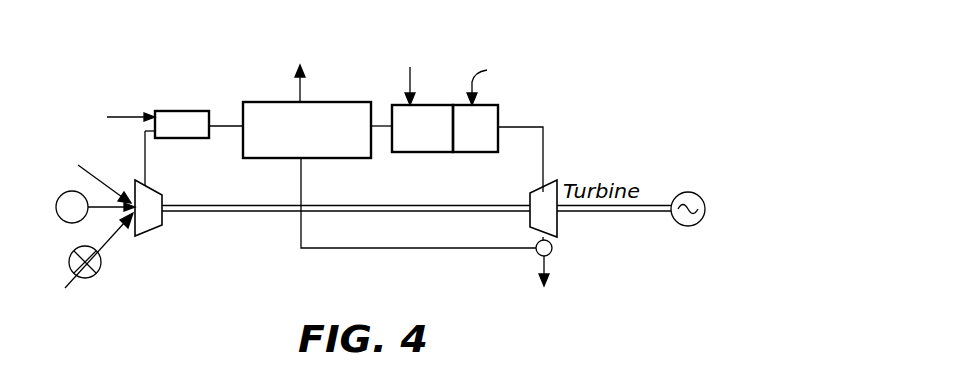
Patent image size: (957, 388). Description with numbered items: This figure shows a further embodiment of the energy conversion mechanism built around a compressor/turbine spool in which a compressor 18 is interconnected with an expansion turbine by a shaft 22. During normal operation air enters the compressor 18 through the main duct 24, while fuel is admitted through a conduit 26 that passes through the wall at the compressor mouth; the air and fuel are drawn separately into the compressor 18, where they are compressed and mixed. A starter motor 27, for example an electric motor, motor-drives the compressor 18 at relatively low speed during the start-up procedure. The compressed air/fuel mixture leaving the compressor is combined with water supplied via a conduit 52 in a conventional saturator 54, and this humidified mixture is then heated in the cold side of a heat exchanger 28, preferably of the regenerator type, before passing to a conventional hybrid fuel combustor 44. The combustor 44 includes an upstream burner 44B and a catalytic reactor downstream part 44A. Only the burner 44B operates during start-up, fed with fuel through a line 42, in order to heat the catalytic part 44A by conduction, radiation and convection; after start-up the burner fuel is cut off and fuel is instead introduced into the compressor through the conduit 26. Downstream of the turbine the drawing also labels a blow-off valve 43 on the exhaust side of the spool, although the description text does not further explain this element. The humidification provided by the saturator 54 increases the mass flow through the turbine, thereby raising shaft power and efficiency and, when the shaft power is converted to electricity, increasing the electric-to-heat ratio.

The compressor 18 is at (152, 186).
The shaft 22 is at (262, 212).
The main duct 24 is at (116, 238).
The conduit 26 is at (109, 183).
The starter motor 27 is at (58, 221).
The heat exchanger 28 is at (268, 102).
The line 42 is at (407, 80).
The blow-off valve 43 is at (550, 257).
The hybrid fuel combustor 44 is at (95, 278).
The catalytic reactor downstream part 44A is at (490, 118).
The upstream burner 44B is at (430, 115).
The conduit 52 is at (118, 116).
The saturator 54 is at (172, 111).